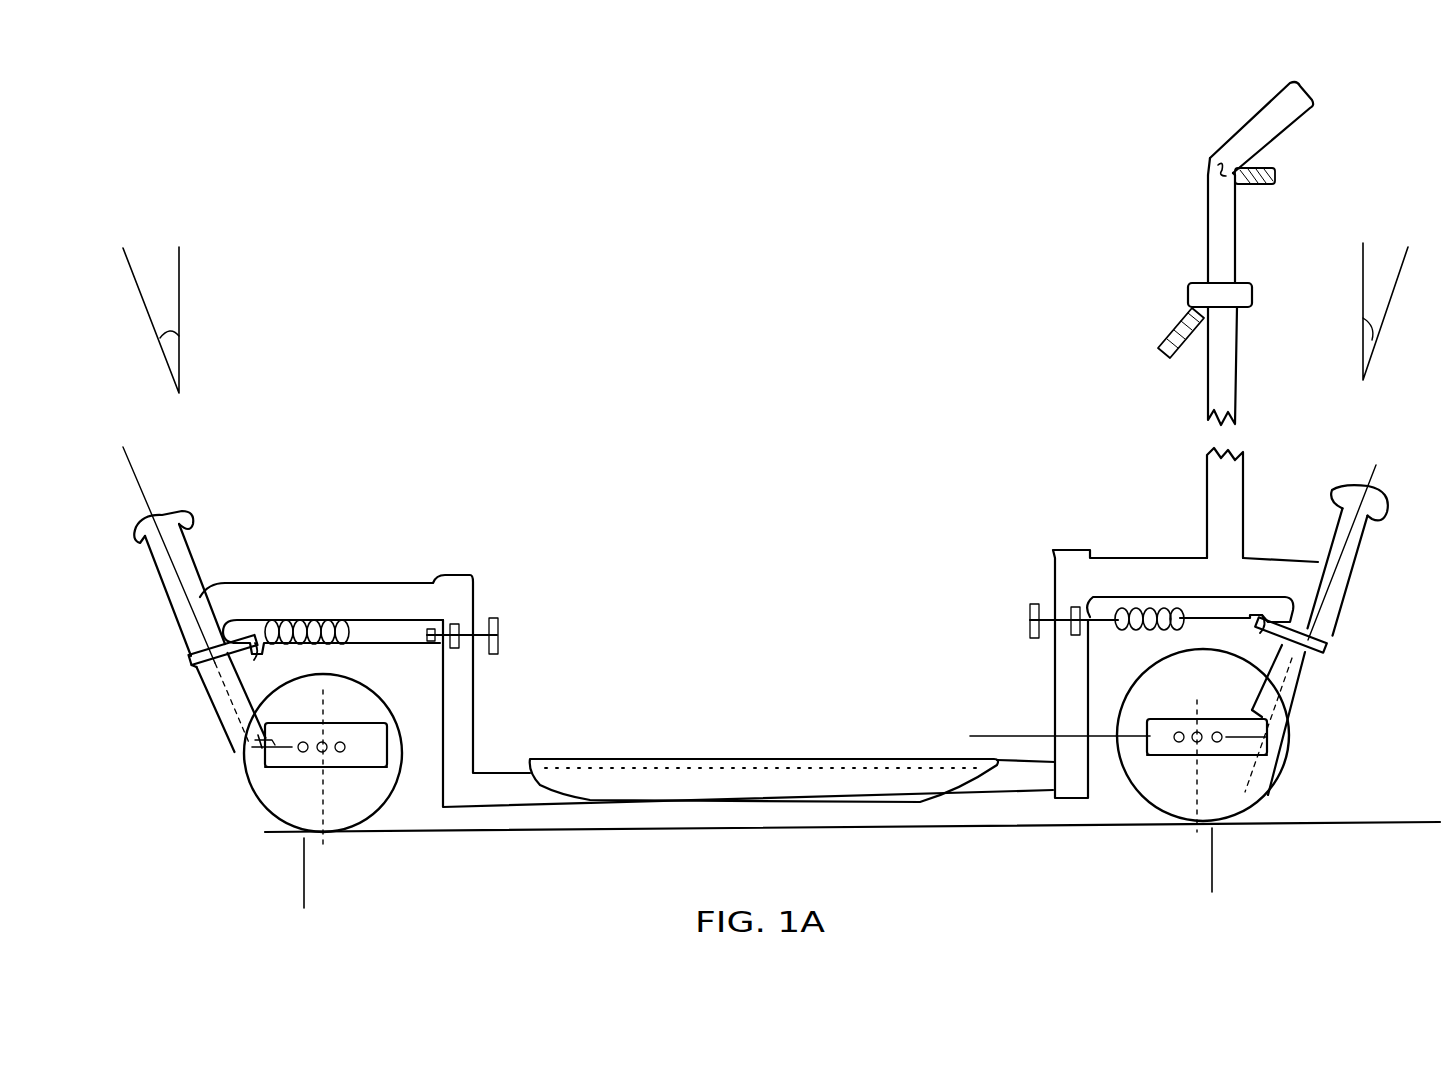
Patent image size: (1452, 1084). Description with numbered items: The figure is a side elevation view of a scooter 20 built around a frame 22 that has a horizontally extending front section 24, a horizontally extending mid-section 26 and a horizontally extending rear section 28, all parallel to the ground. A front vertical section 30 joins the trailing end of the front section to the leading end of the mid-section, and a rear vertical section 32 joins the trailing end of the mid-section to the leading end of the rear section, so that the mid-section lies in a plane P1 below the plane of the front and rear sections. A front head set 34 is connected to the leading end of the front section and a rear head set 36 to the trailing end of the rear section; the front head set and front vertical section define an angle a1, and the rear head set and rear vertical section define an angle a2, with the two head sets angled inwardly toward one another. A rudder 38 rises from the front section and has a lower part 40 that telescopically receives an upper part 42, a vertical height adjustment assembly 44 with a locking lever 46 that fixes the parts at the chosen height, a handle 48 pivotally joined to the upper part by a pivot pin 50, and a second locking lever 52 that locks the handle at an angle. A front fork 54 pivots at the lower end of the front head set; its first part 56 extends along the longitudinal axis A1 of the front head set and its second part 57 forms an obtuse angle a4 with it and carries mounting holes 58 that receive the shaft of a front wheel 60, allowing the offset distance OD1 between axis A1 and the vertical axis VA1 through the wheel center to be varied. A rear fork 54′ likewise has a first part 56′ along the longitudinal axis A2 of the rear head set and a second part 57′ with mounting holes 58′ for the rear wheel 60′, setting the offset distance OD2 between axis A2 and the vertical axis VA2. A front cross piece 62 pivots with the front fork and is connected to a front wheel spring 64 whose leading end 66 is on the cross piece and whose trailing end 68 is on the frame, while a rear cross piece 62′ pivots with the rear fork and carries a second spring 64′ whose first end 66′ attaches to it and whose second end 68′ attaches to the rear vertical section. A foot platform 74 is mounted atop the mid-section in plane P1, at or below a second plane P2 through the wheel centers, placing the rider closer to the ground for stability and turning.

The scooter 20 is at (612, 425).
The frame 22 is at (472, 560).
The horizontally extending front section 24 is at (1155, 572).
The horizontally extending mid-section 26 is at (510, 790).
The horizontally extending rear section 28 is at (305, 600).
The front vertical section 30 is at (1070, 686).
The rear vertical section 32 is at (462, 707).
The front head set 34 is at (1382, 520).
The rear head set 36 is at (158, 572).
The rudder 38 is at (1250, 350).
The lower part of the rudder 40 is at (1236, 395).
The upper part of the rudder 42 is at (1224, 233).
The vertical height adjustment assembly 44 is at (1190, 287).
The locking lever 46 is at (1160, 352).
The handle 48 is at (1253, 130).
The pivot pin 50 is at (1212, 172).
The second locking lever 52 is at (1276, 177).
The front fork 54 is at (1298, 708).
The first part of the front fork 56 is at (1312, 675).
The second part of the front fork 57 is at (1165, 758).
The mounting holes 58 is at (1196, 733).
The front wheel 60 is at (1272, 796).
The front cross piece 62 is at (1322, 650).
The front wheel spring 64 is at (1125, 615).
The leading end 66 is at (1256, 612).
The trailing end 68 is at (1117, 625).
The rear fork 54′ is at (220, 717).
The first part of the rear fork 56′ is at (210, 688).
The second part of the rear fork 57′ is at (285, 770).
The mounting holes 58′ is at (322, 742).
The rear wheel 60′ is at (385, 802).
The rear cross piece 62′ is at (238, 640).
The second spring 64′ is at (327, 635).
The first end 66′ is at (260, 650).
The second end 68′ is at (406, 645).
The foot platform 74 is at (800, 783).
The first plane P1 is at (737, 758).
The second plane P2 is at (1002, 738).
The longitudinal axis of the front head set A1 is at (1322, 608).
The longitudinal axis of the rear head set A2 is at (170, 588).
The angle a1 is at (1365, 320).
The angle a2 is at (168, 330).
The obtuse angle a4 is at (240, 748).
The vertical axis VA1 is at (1196, 790).
The vertical axis VA2 is at (325, 800).
The offset distance OD1 is at (1220, 881).
The offset distance OD2 is at (312, 894).